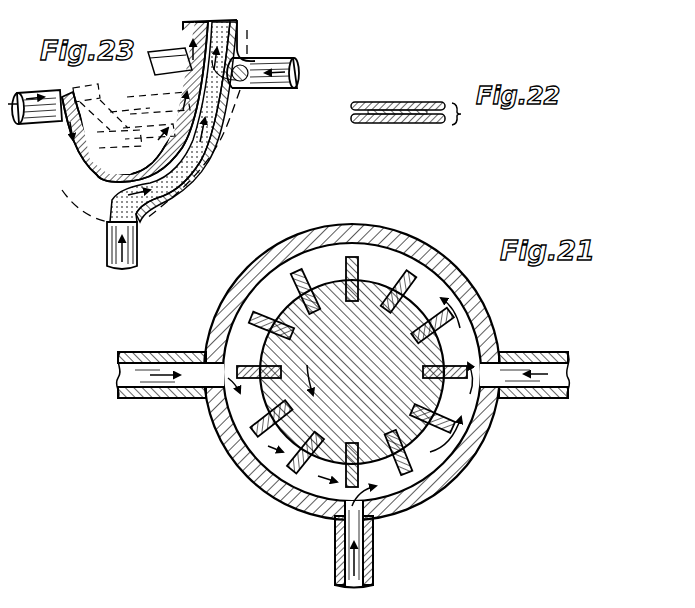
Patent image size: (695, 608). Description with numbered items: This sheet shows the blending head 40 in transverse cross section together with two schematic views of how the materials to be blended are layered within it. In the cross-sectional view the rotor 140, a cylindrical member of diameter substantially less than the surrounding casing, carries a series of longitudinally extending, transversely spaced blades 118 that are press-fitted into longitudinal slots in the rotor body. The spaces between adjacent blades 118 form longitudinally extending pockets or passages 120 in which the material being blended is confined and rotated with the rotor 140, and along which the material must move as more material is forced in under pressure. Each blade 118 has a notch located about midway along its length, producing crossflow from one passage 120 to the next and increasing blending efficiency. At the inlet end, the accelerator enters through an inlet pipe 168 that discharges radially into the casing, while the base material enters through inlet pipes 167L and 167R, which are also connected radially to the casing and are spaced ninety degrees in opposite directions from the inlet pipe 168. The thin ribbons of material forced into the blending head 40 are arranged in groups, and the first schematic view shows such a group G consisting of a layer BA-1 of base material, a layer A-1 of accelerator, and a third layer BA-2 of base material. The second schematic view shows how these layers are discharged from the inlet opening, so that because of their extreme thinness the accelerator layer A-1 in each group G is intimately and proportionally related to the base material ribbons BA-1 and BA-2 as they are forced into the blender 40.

In FIG. 21, the blending head 40 is at (445, 247).
In FIG. 21, the blades 118 is at (345, 262).
In FIG. 23, the blades 118 is at (148, 105).
In FIG. 21, the pockets or passages 120 is at (378, 258).
In FIG. 21, the rotor 140 is at (403, 358).
In FIG. 21, the inlet pipe 167L is at (130, 399).
In FIG. 23, the inlet pipe 167L is at (30, 125).
In FIG. 21, the inlet pipe 167R is at (562, 399).
In FIG. 23, the inlet pipe 167R is at (272, 88).
In FIG. 21, the inlet pipe 168 is at (335, 552).
In FIG. 23, the inlet pipe 168 is at (137, 256).
In FIG. 22, the layer of base material BA-1 is at (365, 102).
In FIG. 23, the layer of base material BA-1 is at (70, 172).
In FIG. 22, the layer of base material BA-2 is at (358, 123).
In FIG. 23, the layer of base material BA-2 is at (240, 34).
In FIG. 22, the layer of accelerator A-1 is at (432, 123).
In FIG. 23, the layer of accelerator A-1 is at (183, 172).
In FIG. 22, the group of layers G is at (462, 114).